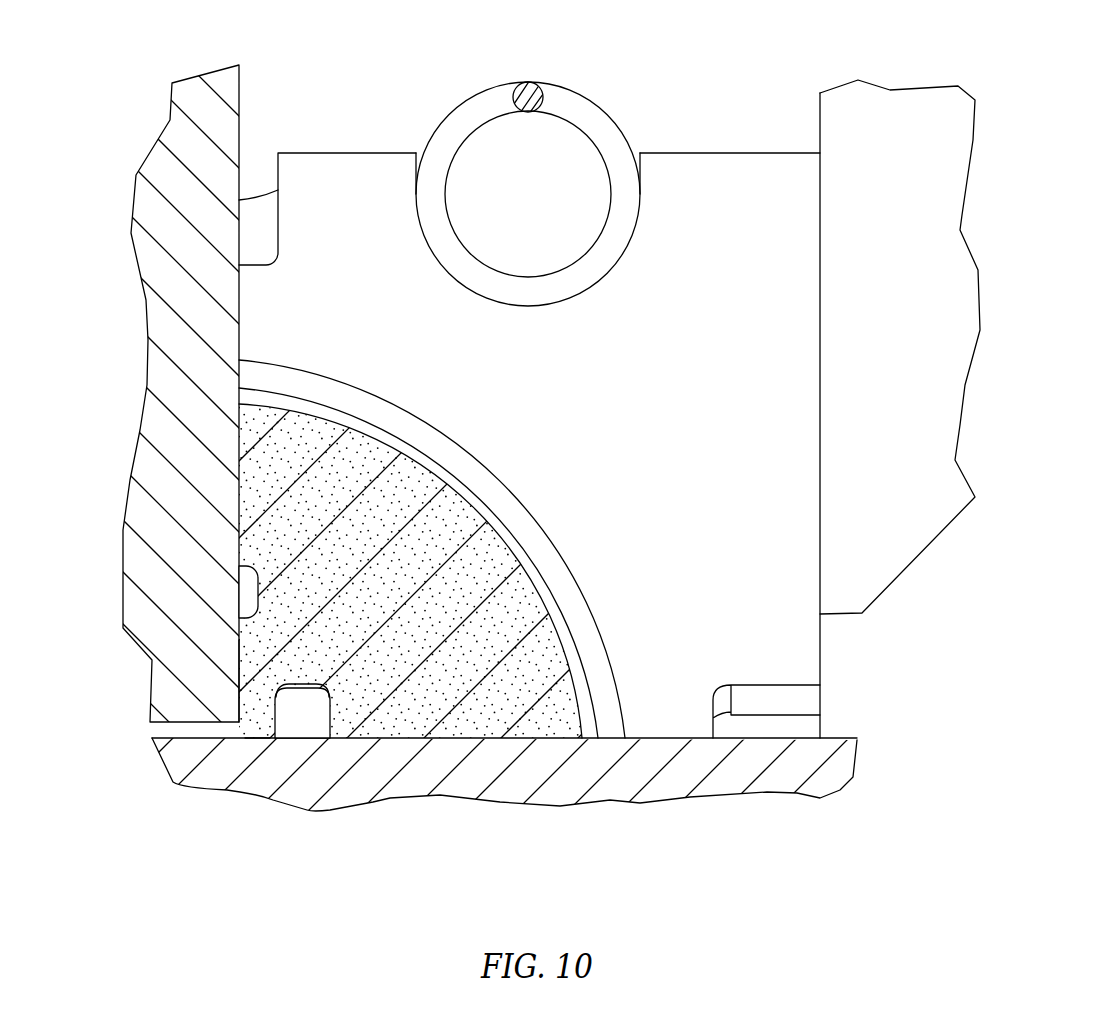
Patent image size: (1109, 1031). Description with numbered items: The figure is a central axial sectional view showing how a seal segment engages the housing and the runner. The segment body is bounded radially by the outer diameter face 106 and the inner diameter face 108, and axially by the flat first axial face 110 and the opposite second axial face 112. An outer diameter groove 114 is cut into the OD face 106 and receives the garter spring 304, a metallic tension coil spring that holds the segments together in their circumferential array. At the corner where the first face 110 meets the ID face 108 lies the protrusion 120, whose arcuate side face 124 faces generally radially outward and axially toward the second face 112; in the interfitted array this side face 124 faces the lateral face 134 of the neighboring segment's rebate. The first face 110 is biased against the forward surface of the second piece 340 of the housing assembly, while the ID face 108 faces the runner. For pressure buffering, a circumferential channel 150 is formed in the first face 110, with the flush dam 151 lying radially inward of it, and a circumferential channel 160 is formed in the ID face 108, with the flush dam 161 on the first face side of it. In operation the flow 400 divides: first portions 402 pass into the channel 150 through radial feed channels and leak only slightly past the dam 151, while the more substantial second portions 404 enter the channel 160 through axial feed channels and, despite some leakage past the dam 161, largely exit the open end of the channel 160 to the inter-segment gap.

The outer diameter (OD) face 106 is at (707, 152).
The inner diameter (ID) face 108 is at (660, 740).
The first axial face 110 is at (233, 340).
The second axial face 112 is at (822, 315).
The outer diameter (OD) groove 114 is at (638, 148).
The protrusion 120 is at (480, 585).
The side face 124 is at (480, 515).
The lateral face 134 is at (582, 630).
The circumferential channel 150 is at (247, 590).
The dam 151 is at (239, 665).
The circumferential channel 160 is at (300, 718).
The dam 161 is at (257, 740).
The garter spring 304 is at (572, 101).
The second piece 340 is at (895, 125).
The flow 400 is at (68, 728).
The first branches or portions 402 is at (258, 168).
The second branches or portions 404 is at (833, 718).